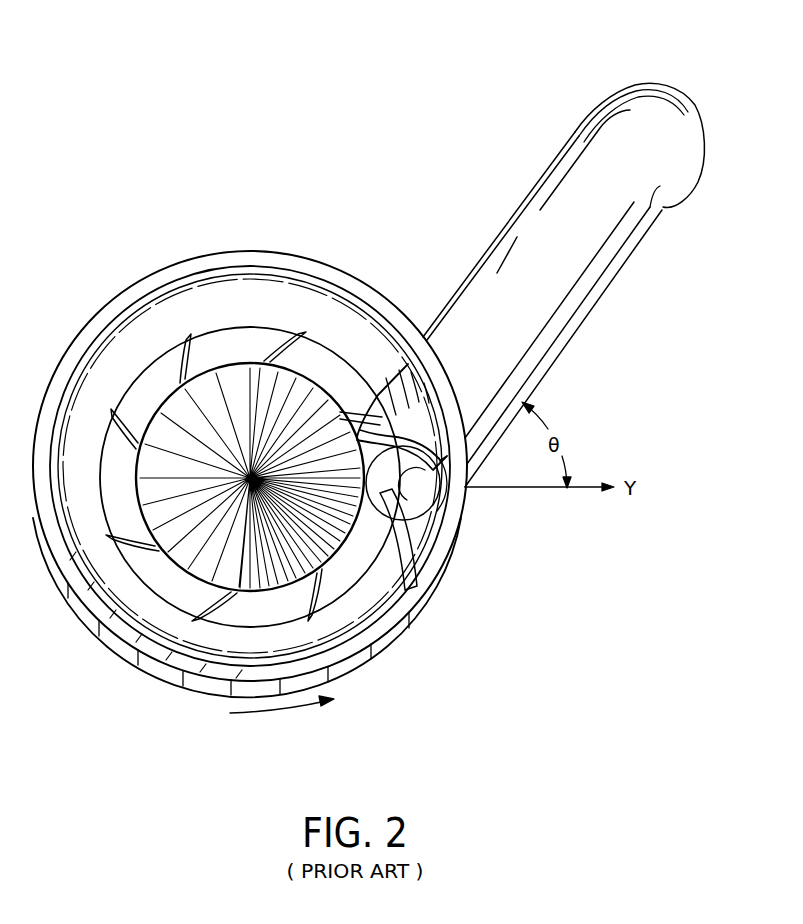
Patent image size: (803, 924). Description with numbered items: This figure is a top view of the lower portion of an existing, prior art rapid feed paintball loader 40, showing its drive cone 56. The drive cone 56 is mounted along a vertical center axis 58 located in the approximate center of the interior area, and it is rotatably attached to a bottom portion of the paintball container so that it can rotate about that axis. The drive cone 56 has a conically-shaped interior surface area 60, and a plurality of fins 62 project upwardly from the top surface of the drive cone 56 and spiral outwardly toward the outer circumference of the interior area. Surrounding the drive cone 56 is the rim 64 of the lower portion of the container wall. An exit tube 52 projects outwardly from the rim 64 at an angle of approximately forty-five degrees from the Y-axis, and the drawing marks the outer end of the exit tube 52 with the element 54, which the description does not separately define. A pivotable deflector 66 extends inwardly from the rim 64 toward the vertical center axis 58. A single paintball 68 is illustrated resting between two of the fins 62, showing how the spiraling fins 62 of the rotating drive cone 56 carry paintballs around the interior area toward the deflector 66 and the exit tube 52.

The paintball loader 40 is at (238, 216).
The exit tube 52 is at (537, 236).
The handle end cap 54 is at (676, 84).
The drive cone 56 is at (172, 438).
The vertical center axis 58 is at (249, 476).
The conically-shaped interior surface area 60 is at (232, 350).
The fins 62 is at (182, 368).
The rim 64 is at (362, 646).
The pivotable deflector 66 is at (407, 560).
The paintball 68 is at (425, 500).